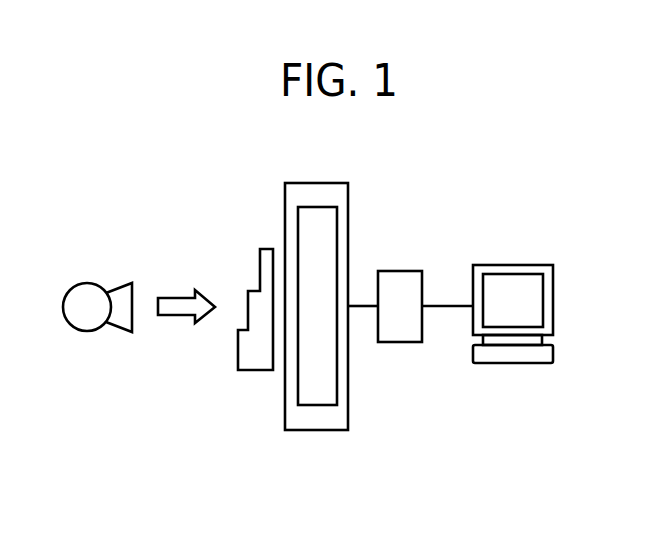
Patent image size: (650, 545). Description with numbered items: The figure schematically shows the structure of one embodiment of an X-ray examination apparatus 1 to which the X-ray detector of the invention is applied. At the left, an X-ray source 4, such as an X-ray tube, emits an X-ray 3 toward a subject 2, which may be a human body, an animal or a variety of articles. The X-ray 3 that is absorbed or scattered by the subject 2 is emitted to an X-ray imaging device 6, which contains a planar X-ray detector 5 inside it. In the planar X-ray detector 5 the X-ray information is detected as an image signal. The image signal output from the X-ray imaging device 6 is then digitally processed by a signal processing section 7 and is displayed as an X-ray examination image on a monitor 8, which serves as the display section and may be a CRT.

The X-ray examination apparatus 1 is at (147, 200).
The subject 2 is at (265, 249).
The X-ray 3 is at (176, 298).
The X-ray source 4 is at (87, 282).
The planar X-ray detector 5 is at (313, 207).
The X-ray imaging device 6 is at (348, 409).
The signal processing section 7 is at (398, 271).
The monitor 8 is at (513, 265).